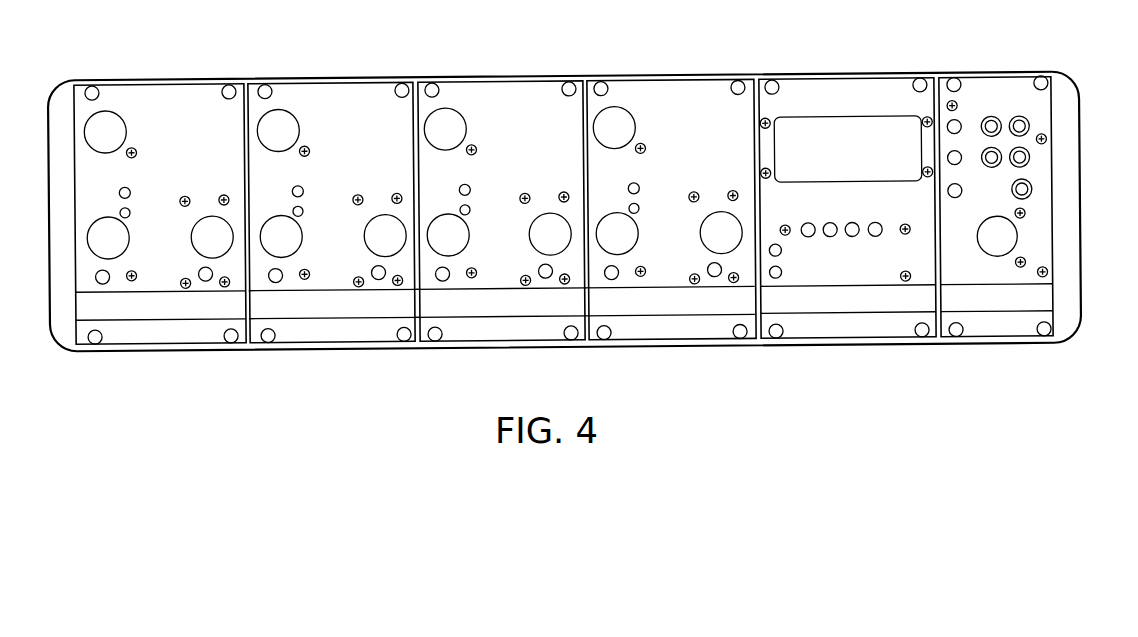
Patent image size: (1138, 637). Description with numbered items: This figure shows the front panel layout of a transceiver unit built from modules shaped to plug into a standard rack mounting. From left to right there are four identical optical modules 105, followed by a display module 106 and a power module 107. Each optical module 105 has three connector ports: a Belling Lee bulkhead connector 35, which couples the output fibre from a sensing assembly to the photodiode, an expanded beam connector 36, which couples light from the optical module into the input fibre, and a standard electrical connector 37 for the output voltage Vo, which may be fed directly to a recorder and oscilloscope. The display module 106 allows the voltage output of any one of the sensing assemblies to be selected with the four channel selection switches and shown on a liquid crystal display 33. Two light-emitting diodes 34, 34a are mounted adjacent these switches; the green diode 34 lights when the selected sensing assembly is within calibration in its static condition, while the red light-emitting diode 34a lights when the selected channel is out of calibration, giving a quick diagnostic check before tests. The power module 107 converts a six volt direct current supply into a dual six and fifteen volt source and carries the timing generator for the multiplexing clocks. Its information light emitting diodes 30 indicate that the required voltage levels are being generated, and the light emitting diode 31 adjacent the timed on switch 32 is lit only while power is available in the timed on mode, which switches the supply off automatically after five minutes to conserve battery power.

The optical module 105 is at (198, 89).
The display module 106 is at (810, 85).
The power module 107 is at (970, 84).
The information light emitting diodes 30 is at (994, 121).
The light emitting diode 31 is at (1030, 194).
The timed on switch 32 is at (950, 198).
The liquid crystal display 33 is at (853, 157).
The light-emitting diode 34 is at (780, 257).
The red light-emitting diode 34a is at (780, 279).
The Belling Lee bulkhead connector 35 is at (119, 234).
The expanded beam connector 36 is at (197, 242).
The electrical connector 37 is at (117, 128).